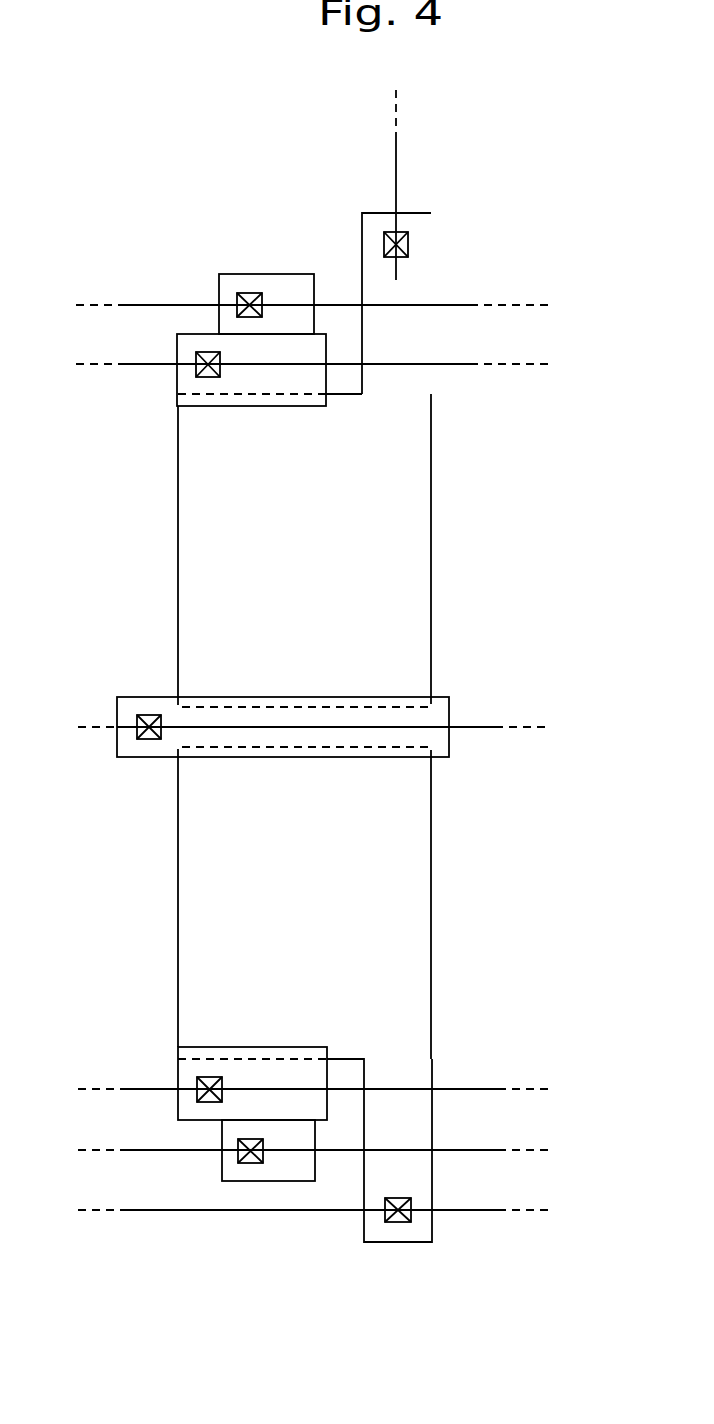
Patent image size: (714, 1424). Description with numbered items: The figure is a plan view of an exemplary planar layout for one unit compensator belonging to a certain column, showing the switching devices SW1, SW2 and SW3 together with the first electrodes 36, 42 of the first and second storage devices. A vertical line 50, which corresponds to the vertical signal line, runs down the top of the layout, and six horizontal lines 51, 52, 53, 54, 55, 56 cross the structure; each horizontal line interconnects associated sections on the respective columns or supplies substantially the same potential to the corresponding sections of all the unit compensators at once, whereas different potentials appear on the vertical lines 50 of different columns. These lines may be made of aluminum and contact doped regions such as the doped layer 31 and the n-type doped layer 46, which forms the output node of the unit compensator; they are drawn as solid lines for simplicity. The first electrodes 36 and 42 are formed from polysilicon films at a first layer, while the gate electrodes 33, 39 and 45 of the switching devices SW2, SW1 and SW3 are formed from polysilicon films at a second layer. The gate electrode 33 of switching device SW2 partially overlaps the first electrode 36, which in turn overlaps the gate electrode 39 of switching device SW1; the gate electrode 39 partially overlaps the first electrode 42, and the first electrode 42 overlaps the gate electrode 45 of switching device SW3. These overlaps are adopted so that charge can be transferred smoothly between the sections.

The doped layer 31 is at (277, 274).
The gate electrode 33 is at (177, 350).
The first electrode 36 is at (431, 527).
The gate electrode 39 is at (452, 757).
The first electrode 42 is at (432, 927).
The gate electrode 45 is at (178, 1107).
The n-type doped layer 46 is at (237, 1181).
The vertical line 50 is at (396, 171).
The horizontal line 51 is at (468, 304).
The horizontal line 52 is at (468, 364).
The horizontal line 53 is at (483, 728).
The horizontal line 54 is at (475, 1089).
The horizontal line 55 is at (474, 1150).
The horizontal line 56 is at (475, 1210).
The switching device SW1 is at (480, 691).
The switching device SW2 is at (181, 295).
The switching device SW3 is at (146, 1065).